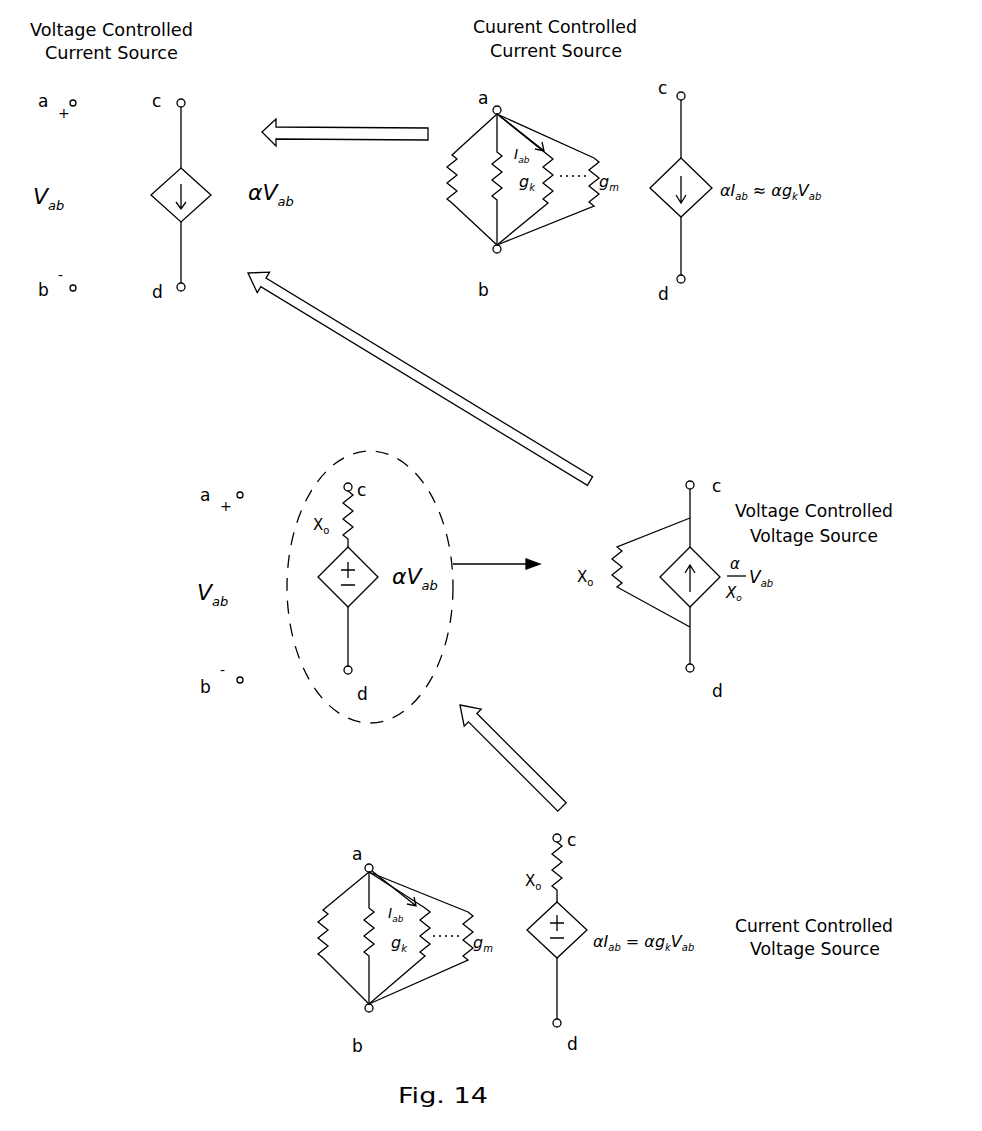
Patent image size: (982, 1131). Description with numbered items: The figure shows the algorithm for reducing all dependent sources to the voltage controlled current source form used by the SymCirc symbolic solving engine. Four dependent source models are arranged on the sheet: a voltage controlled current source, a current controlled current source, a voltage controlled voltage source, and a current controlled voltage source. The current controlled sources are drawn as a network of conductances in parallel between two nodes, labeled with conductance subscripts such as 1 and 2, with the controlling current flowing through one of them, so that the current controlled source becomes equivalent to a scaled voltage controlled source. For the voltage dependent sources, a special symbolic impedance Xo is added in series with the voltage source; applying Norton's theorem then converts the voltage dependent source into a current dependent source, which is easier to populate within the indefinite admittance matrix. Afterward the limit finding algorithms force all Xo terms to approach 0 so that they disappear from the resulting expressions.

The conductance g1 1 is at (399, 559).
The conductance g2 2 is at (424, 559).
The series impedance Xo approaching zero 0 is at (621, 694).